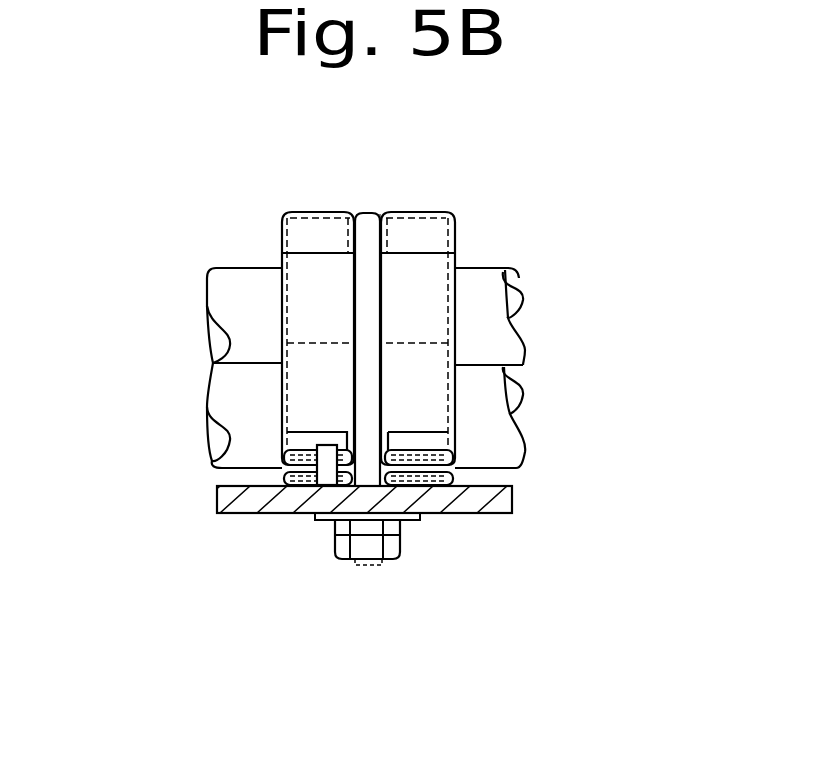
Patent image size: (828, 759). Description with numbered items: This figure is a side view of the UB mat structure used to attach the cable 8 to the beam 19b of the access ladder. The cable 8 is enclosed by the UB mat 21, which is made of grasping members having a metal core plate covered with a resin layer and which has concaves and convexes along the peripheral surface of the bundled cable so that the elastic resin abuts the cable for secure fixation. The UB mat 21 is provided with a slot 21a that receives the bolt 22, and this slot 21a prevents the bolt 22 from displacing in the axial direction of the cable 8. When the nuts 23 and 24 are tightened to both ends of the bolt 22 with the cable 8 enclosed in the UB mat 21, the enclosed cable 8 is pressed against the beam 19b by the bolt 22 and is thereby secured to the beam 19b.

The cable 8 is at (508, 348).
The beam 19b is at (450, 507).
The UB mat 21 is at (432, 226).
The slot 21a is at (386, 208).
The bolt 22 is at (367, 214).
The nut 23 is at (367, 583).
The nut 24 is at (365, 550).